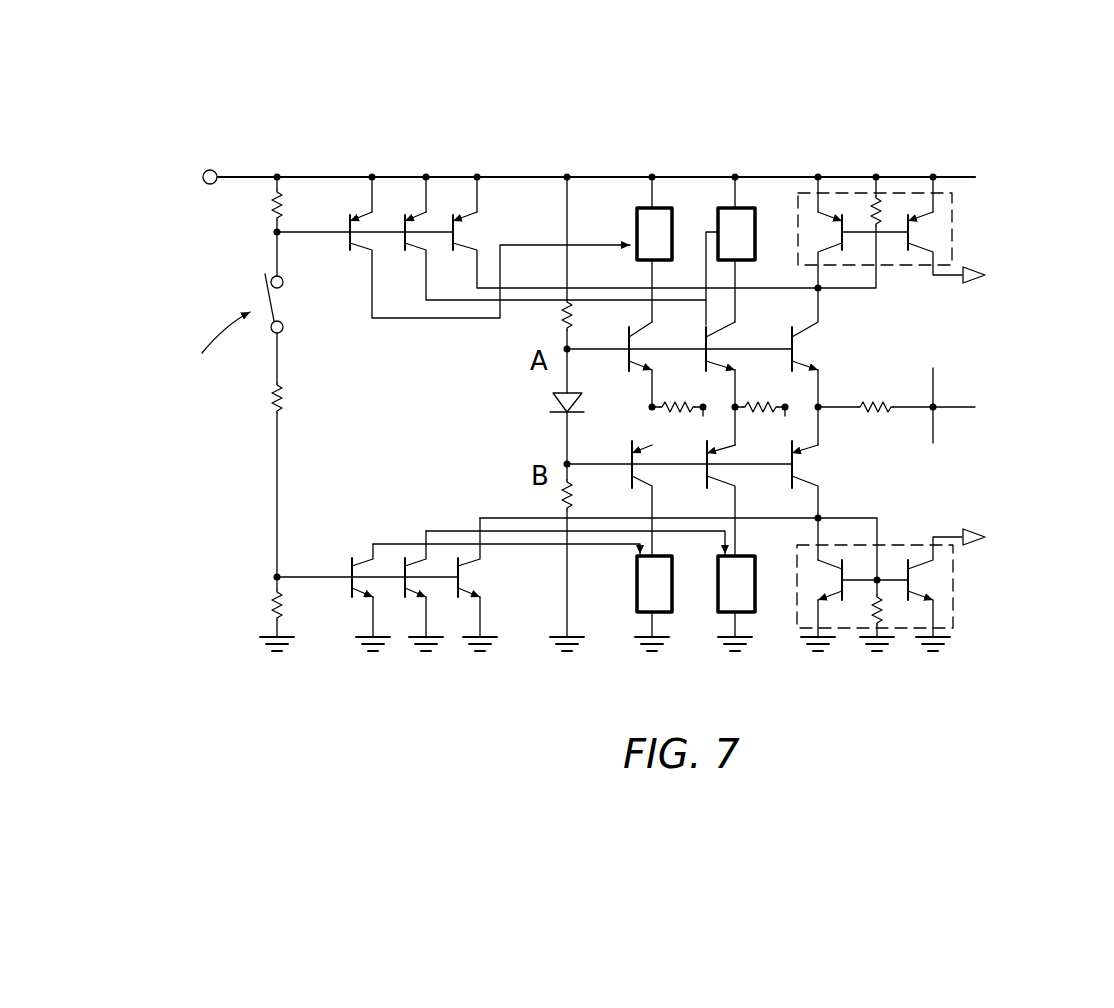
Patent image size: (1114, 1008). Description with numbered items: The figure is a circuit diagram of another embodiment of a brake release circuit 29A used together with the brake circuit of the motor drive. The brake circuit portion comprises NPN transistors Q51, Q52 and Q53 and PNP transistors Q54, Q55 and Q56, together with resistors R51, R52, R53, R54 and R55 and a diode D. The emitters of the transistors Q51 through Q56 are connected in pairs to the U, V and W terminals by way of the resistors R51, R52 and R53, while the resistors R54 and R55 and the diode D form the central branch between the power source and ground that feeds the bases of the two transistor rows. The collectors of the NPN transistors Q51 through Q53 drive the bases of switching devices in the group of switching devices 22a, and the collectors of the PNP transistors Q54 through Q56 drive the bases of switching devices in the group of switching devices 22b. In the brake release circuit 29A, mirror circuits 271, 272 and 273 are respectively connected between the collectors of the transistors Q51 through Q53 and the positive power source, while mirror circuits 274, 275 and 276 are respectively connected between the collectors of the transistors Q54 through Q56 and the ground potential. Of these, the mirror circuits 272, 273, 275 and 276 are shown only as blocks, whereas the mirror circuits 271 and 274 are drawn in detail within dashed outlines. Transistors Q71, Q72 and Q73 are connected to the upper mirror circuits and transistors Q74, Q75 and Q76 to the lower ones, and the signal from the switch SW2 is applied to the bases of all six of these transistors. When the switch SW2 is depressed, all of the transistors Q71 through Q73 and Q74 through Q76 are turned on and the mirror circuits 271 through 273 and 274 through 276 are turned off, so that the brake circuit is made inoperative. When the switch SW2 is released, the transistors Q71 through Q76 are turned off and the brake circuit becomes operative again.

The brake release circuit 29A is at (834, 145).
The mirror circuit 271 is at (953, 218).
The mirror circuit 272 is at (748, 208).
The mirror circuit 273 is at (665, 208).
The mirror circuit 274 is at (953, 600).
The mirror circuit 275 is at (755, 585).
The mirror circuit 276 is at (672, 590).
The group of switching devices 22a is at (1019, 277).
The group of switching devices 22b is at (1018, 539).
The switch SW2 is at (262, 414).
The transistor Q71 is at (500, 203).
The transistor Q72 is at (448, 207).
The transistor Q73 is at (383, 208).
The transistor Q74 is at (462, 608).
The transistor Q75 is at (403, 613).
The transistor Q76 is at (346, 597).
The NPN transistor Q51 is at (828, 366).
The NPN transistor Q52 is at (745, 383).
The NPN transistor Q53 is at (665, 364).
The PNP transistor Q54 is at (830, 500).
The PNP transistor Q55 is at (745, 497).
The PNP transistor Q56 is at (667, 497).
The resistor R51 is at (895, 405).
The resistor R52 is at (763, 408).
The resistor R53 is at (683, 408).
The resistor R54 is at (540, 324).
The resistor R55 is at (531, 557).
The diode D is at (549, 406).